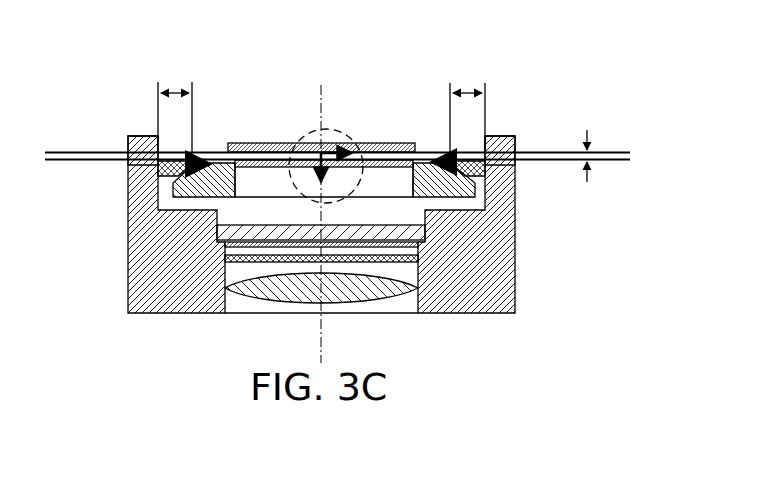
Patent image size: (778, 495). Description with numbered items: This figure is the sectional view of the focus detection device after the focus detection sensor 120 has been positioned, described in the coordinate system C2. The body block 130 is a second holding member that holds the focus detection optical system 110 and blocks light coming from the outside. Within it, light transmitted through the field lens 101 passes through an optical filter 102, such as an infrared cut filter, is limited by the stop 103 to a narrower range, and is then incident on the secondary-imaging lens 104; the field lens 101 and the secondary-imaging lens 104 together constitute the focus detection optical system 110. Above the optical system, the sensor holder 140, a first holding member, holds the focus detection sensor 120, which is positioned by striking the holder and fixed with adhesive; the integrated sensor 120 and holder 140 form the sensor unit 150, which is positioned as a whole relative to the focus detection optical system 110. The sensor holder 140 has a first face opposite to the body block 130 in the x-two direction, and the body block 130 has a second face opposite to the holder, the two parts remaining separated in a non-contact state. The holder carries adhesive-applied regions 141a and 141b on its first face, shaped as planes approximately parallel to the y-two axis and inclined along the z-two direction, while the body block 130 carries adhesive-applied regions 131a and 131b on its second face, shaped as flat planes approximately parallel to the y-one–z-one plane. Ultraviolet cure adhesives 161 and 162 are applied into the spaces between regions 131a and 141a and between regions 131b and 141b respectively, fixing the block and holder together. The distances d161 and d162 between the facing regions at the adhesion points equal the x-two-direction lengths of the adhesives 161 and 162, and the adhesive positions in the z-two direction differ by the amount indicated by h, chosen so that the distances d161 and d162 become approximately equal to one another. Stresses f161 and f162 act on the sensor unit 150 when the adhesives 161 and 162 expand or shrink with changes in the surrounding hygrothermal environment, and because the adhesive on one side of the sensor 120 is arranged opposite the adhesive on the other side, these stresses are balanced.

The body block 130 is at (460, 300).
The adhesive 161 is at (158, 162).
The adhesive 162 is at (493, 150).
The adhesive-applied region 131a is at (168, 186).
The adhesive-applied region 131b is at (477, 180).
The adhesive-applied region 141a is at (162, 177).
The adhesive-applied region 141b is at (470, 178).
The sensor unit 150 is at (321, 89).
The sensor holder 140 is at (232, 145).
The focus detection sensor 120 is at (241, 160).
The focus detection optical system 110 is at (368, 271).
The secondary-imaging lens 104 is at (413, 232).
The stop 103 is at (230, 243).
The optical filter 102 is at (230, 260).
The field lens 101 is at (397, 288).
The coordinate system C2 is at (322, 130).
The distance d161 is at (174, 106).
The distance d162 is at (463, 107).
The stress f161 is at (207, 165).
The stress f162 is at (437, 156).
The difference in z2 coordinates h is at (598, 156).